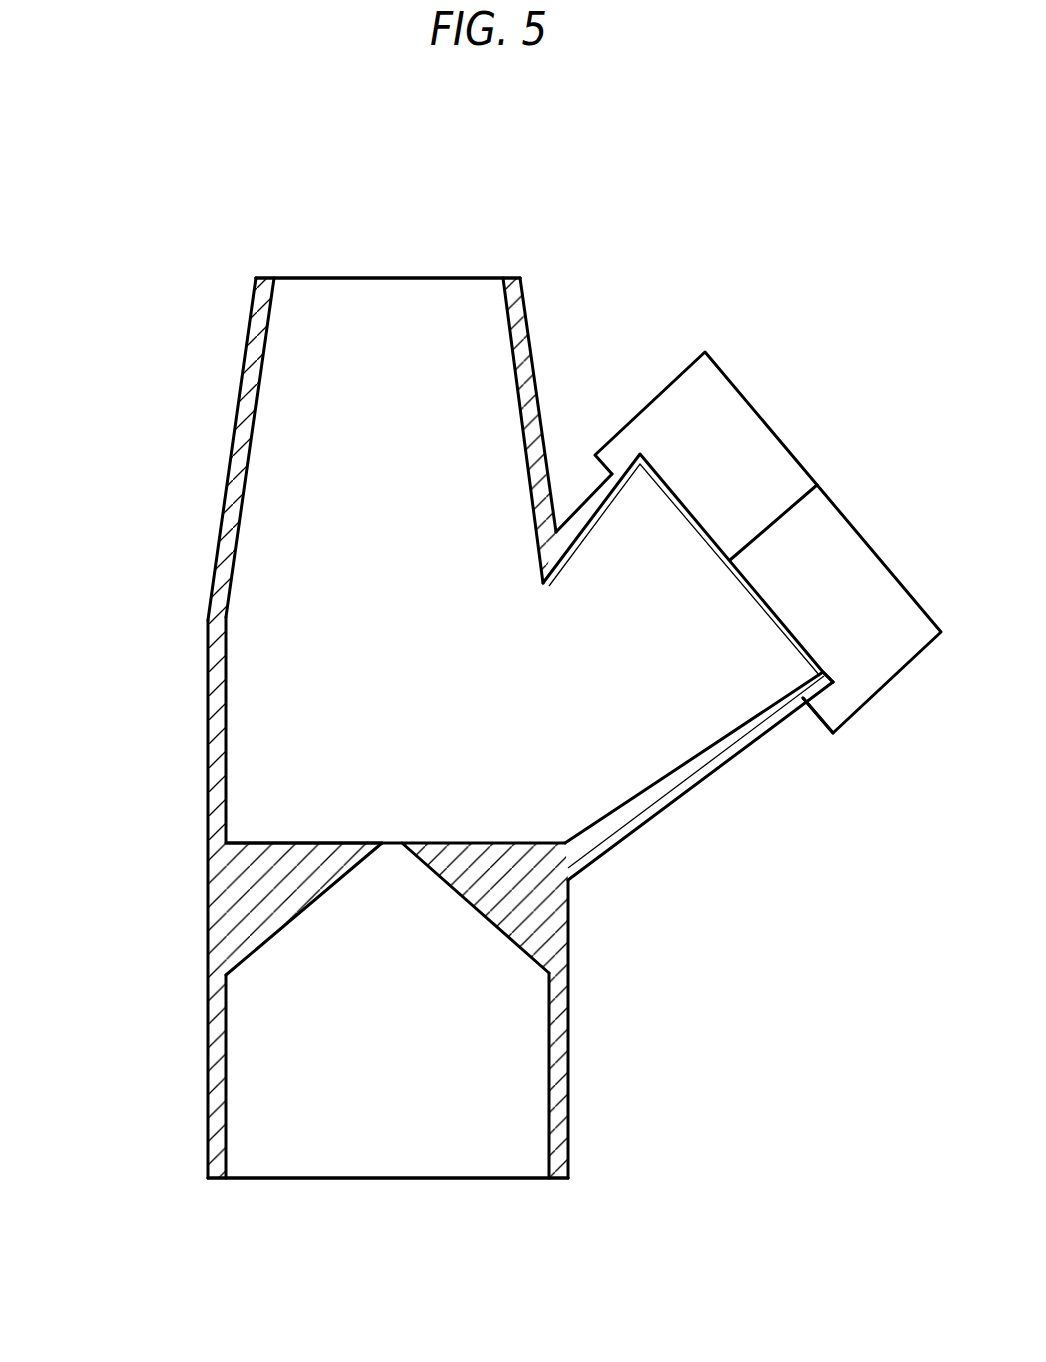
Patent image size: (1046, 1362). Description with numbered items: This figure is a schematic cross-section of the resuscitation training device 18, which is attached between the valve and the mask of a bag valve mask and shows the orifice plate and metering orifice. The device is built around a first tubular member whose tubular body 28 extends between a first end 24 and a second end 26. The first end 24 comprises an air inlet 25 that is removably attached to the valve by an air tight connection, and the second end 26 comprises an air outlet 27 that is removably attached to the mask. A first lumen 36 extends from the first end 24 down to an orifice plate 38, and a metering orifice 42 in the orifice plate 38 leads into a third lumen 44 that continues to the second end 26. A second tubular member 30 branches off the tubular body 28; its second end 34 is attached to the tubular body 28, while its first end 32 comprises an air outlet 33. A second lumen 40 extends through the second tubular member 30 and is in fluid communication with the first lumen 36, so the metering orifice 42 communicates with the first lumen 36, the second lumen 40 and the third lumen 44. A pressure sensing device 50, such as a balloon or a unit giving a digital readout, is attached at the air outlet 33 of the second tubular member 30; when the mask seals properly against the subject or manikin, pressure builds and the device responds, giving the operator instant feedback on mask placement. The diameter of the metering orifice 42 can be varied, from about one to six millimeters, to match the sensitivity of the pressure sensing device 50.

The resuscitation training device 18 is at (165, 617).
The first end 24 is at (263, 278).
The air inlet 25 is at (424, 278).
The second end 26 is at (238, 1180).
The air outlet 27 is at (470, 1180).
The tubular body 28 is at (207, 894).
The second tubular member 30 is at (757, 743).
The first end 32 is at (832, 681).
The air outlet 33 is at (815, 480).
The second end 34 is at (571, 882).
The first lumen 36 is at (250, 457).
The orifice plate 38 is at (283, 843).
The second lumen 40 is at (626, 801).
The metering orifice 42 is at (383, 843).
The third lumen 44 is at (227, 1078).
The pressure sensing device 50 is at (762, 418).